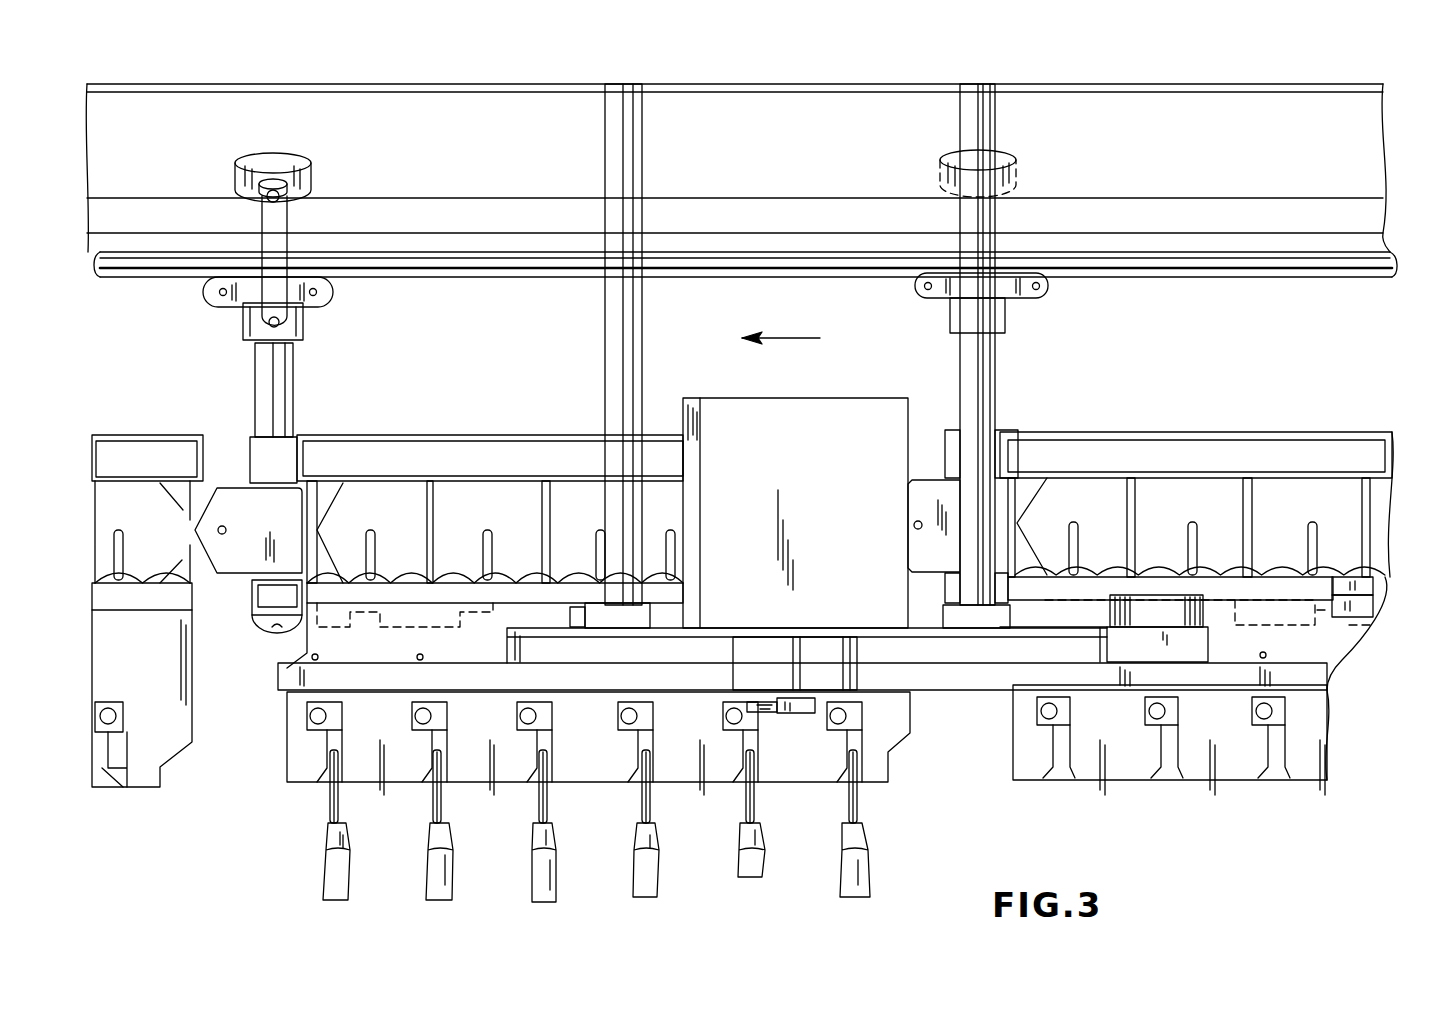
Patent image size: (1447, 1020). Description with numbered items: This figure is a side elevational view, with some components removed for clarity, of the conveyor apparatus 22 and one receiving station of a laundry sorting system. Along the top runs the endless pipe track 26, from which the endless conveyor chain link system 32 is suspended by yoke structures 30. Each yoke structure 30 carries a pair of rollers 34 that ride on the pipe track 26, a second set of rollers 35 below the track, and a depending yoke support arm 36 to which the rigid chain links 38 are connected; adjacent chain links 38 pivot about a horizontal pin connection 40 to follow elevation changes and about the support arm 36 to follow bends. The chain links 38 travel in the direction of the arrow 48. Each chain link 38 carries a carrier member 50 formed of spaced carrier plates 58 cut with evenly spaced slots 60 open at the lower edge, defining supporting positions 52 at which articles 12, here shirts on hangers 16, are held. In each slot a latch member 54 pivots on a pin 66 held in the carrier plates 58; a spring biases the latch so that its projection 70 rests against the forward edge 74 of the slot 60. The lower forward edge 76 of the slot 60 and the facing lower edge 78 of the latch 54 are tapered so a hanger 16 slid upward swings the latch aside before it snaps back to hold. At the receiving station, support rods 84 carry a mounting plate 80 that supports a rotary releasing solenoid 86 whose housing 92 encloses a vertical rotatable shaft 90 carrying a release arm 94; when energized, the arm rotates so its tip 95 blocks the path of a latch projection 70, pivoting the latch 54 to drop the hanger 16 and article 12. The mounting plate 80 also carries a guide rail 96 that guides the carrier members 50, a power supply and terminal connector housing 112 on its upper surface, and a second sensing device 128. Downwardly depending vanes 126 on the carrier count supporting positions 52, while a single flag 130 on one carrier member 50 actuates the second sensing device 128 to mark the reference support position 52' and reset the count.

The identifiable articles 12 is at (322, 882).
The hanger 16 is at (330, 795).
The conveyor apparatus 22 is at (1108, 398).
The pipe track 26 is at (383, 205).
The yoke structure 30 is at (268, 220).
The endless conveyor chain link system 32 is at (1010, 428).
The rollers 34 is at (300, 163).
The second set of rollers 35 is at (215, 306).
The yoke support arm 36 is at (295, 365).
The chain link 38 is at (468, 450).
The pin connection 40 is at (226, 529).
The arrow 48 is at (778, 338).
The carrier member 50 is at (300, 623).
The supporting position 52 is at (469, 765).
The reference support position 52' is at (1021, 778).
The latch member 54 is at (122, 710).
The carrier plate 58 is at (398, 768).
The slot 60 is at (641, 740).
The pivot pin 66 is at (318, 656).
The projection 70 is at (537, 716).
The forward edge 74 is at (412, 708).
The lower forward edge 76 is at (532, 812).
The lower edge of latch 78 is at (642, 776).
The mounting plate 80 is at (583, 610).
The support rods 84 is at (643, 340).
The rotary releasing solenoid 86 is at (805, 637).
The rotatable shaft 90 is at (808, 687).
The solenoid housing 92 is at (835, 645).
The release arm 94 is at (764, 686).
The tip of release arm 95 is at (744, 686).
The guide rail 96 is at (960, 680).
The power supply and terminal connector housing 112 is at (795, 513).
The vanes 126 is at (472, 632).
The second sensing device 128 is at (1117, 600).
The flag 130 is at (1373, 592).